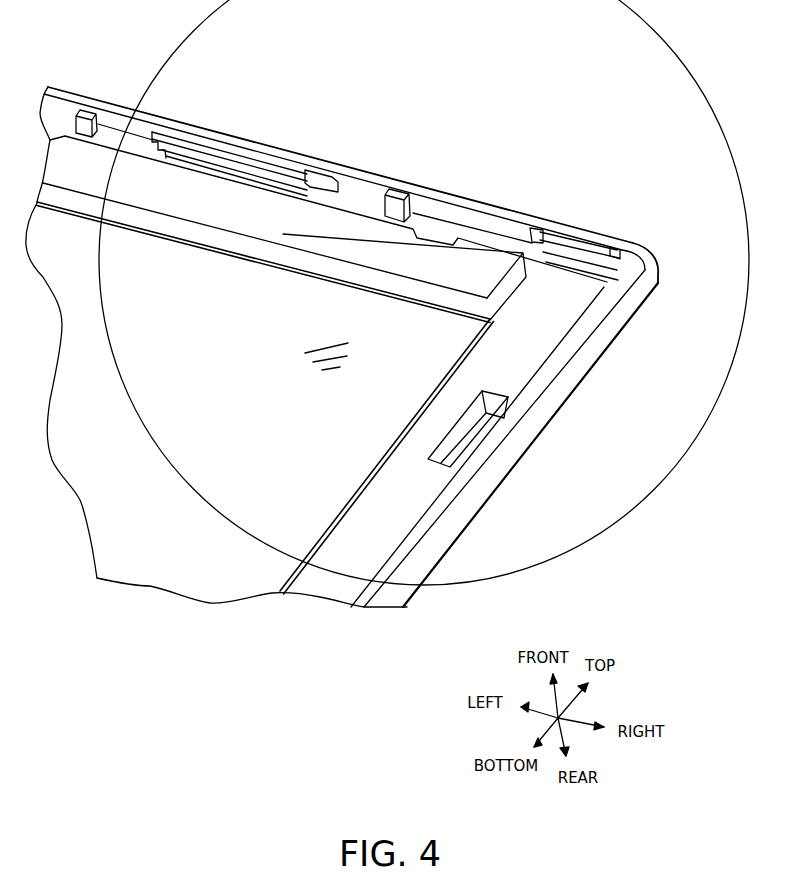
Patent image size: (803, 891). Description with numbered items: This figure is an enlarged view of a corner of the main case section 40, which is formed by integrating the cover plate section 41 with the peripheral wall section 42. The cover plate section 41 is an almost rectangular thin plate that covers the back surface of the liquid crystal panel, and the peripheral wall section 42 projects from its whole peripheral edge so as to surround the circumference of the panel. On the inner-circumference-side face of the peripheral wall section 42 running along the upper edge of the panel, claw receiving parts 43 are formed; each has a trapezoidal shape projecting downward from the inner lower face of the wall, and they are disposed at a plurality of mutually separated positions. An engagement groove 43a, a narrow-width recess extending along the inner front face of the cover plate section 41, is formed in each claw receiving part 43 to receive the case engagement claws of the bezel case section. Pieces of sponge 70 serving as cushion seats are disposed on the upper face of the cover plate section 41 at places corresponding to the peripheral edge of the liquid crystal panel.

The main case section 40 is at (640, 188).
The cover plate section 41 is at (250, 493).
The peripheral wall section 42 is at (493, 220).
The claw receiving part 43 is at (230, 148).
The engagement groove 43a is at (307, 178).
The sponge 70 is at (280, 234).